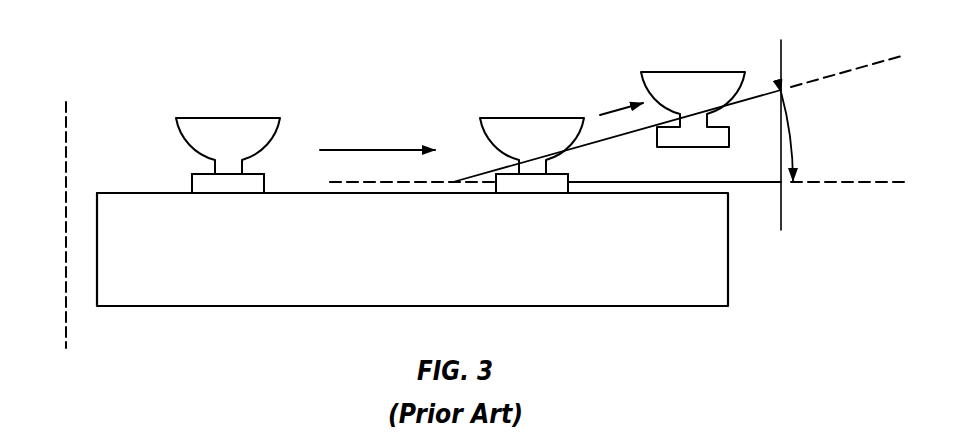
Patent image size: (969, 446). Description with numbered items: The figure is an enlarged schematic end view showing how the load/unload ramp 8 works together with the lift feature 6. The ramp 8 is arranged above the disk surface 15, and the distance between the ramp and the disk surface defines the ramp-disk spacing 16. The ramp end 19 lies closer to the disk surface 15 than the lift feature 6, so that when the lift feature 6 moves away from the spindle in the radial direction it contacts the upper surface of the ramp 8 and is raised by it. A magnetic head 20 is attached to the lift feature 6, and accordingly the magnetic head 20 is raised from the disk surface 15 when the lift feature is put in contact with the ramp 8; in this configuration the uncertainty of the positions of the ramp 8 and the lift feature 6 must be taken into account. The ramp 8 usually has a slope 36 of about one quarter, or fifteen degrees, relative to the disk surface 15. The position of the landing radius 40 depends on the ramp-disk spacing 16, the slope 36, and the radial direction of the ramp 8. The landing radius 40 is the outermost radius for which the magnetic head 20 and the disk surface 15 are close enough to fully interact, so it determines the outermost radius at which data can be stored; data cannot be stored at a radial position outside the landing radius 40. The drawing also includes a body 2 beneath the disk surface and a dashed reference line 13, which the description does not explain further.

The table / support surface 2 is at (420, 276).
The lift feature 6 is at (234, 152).
The ramp 8 is at (767, 148).
The reference line / wall 13 is at (105, 225).
The disk surface 15 is at (297, 178).
The ramp-disk spacing 16 is at (384, 210).
The ramp end 19 is at (644, 145).
The magnetic head 20 is at (218, 206).
The slope 36 is at (820, 136).
The landing radius 40 is at (515, 209).